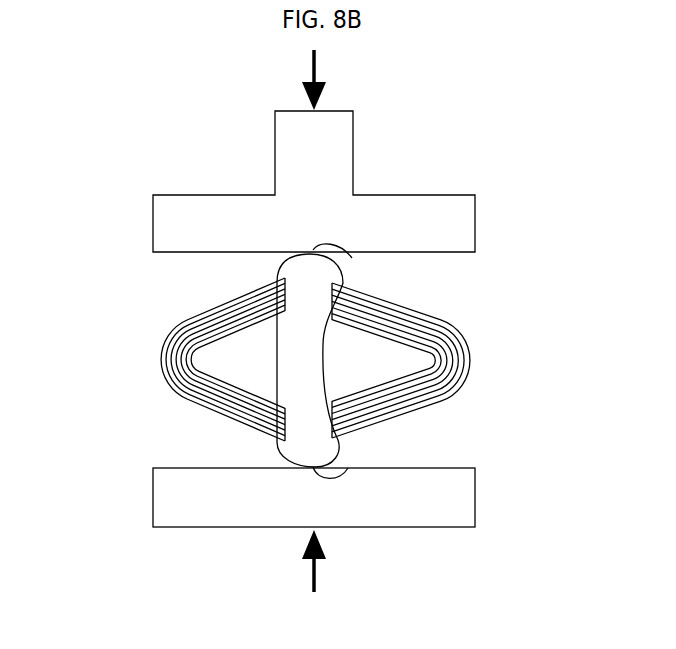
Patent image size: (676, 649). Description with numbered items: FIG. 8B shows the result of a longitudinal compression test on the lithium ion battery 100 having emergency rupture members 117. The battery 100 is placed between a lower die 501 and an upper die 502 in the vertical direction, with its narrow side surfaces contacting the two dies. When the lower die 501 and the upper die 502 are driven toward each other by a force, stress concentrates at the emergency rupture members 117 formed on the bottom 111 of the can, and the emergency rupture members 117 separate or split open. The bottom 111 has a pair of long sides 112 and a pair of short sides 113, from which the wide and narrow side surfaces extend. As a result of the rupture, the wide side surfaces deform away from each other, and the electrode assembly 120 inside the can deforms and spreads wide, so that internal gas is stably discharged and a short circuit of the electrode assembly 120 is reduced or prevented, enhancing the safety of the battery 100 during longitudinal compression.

The lithium ion battery 100 is at (148, 313).
The bottom 111 is at (290, 375).
The long sides 112 is at (315, 359).
The short sides 113 is at (352, 258).
The emergency rupture members 117 is at (272, 340).
The electrode assembly 120 is at (450, 321).
The lower die 501 is at (468, 502).
The upper die 502 is at (468, 224).